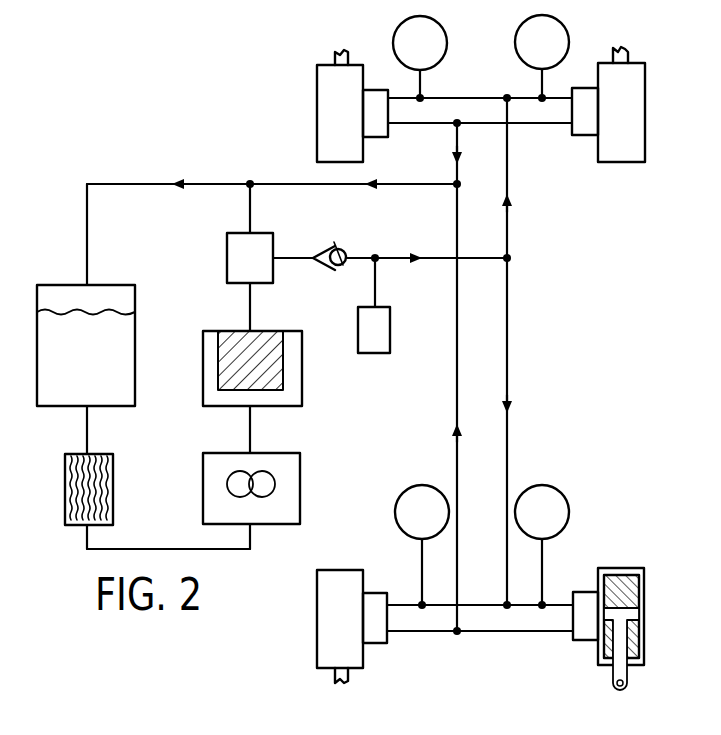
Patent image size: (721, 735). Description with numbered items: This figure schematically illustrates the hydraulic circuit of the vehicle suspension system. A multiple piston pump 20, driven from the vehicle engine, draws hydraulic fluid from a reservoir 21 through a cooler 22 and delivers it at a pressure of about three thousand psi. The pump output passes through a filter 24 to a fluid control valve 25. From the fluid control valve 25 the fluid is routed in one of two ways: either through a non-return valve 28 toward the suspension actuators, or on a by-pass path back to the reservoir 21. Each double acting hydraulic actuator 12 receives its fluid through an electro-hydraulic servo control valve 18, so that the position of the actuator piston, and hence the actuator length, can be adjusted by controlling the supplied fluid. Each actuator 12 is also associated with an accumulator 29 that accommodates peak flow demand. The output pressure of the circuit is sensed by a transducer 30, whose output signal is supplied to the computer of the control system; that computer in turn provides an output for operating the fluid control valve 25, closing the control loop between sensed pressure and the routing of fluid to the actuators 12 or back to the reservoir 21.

The double acting hydraulic actuator 12 is at (328, 101).
The electro-hydraulic servo control valve 18 is at (586, 119).
The multiple piston pump 20 is at (293, 476).
The reservoir 21 is at (116, 344).
The cooler 22 is at (105, 496).
The filter 24 is at (228, 345).
The fluid control valve 25 is at (232, 247).
The non-return valve 28 is at (330, 256).
The accumulator 29 is at (528, 40).
The transducer 30 is at (377, 341).